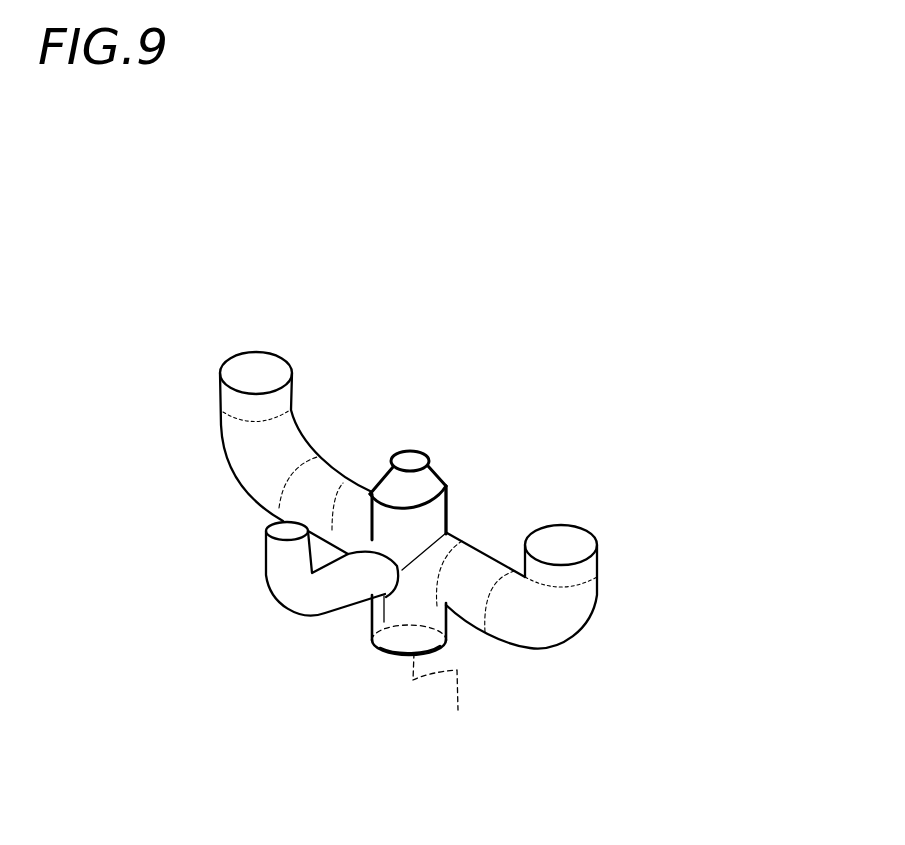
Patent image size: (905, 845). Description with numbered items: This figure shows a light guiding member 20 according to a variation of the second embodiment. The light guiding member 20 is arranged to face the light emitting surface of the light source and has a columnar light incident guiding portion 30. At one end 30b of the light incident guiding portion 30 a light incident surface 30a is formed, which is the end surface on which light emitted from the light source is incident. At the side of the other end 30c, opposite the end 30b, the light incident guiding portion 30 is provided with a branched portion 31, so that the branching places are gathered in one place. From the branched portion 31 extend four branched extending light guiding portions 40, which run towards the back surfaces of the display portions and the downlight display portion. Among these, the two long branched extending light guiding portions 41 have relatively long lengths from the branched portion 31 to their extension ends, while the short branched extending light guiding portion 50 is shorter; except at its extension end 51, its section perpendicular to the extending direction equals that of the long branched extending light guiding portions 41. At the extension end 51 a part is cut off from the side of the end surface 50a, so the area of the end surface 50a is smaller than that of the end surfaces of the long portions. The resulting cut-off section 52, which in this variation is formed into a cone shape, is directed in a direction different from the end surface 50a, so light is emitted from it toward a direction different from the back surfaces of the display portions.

The light guiding member 20 is at (413, 377).
The light incident guiding portion 30 is at (390, 601).
The light incident surface 30a is at (447, 702).
The end 30b is at (447, 643).
The other end 30c is at (446, 536).
The branched portion 31 is at (283, 519).
The branched extending light guiding portion 40 is at (432, 484).
The long branched extending light guiding portion 41 is at (236, 411).
The short branched extending light guiding portion 50 is at (453, 431).
The end surface 50a is at (414, 463).
The extension end 51 is at (436, 449).
The cut-off section 52 is at (449, 460).